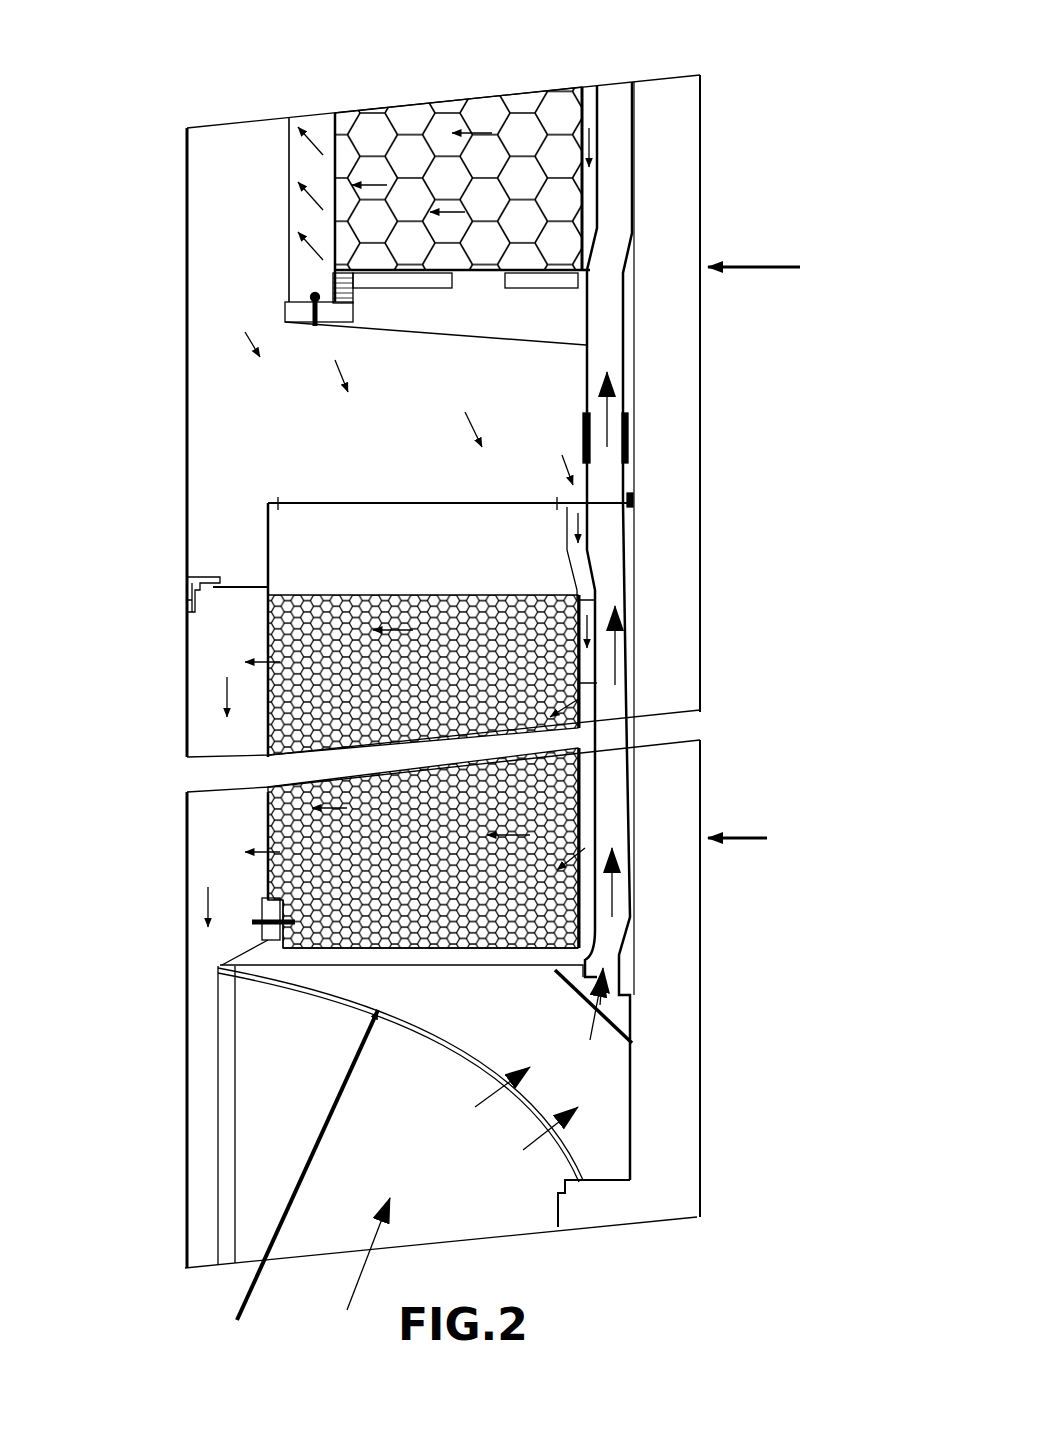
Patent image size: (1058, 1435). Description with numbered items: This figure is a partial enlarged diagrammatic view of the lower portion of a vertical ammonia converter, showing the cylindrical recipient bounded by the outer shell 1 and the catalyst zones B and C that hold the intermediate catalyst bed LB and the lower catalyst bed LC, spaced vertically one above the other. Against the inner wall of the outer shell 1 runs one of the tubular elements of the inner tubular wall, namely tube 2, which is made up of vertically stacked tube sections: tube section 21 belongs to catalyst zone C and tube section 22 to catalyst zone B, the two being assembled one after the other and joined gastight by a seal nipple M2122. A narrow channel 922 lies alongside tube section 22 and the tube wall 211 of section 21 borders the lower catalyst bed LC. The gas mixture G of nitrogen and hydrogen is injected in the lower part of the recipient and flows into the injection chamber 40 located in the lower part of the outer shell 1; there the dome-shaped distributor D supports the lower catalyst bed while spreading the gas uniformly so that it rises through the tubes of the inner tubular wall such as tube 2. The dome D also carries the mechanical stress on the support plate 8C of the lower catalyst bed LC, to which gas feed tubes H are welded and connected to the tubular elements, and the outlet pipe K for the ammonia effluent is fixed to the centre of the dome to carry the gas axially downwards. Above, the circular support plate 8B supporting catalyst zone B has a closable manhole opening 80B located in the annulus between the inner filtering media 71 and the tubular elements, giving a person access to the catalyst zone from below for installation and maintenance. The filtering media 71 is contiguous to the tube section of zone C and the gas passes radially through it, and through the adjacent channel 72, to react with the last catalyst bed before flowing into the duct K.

The outer shell 1 is at (675, 860).
The tube 2 is at (610, 473).
The tube section 21 is at (609, 780).
The duct inner wall 211 is at (587, 813).
The tube section 22 is at (615, 210).
The seal nipple M2122 is at (633, 428).
The air channel 922 is at (590, 122).
The intermediate catalyst bed LB is at (525, 122).
The lower catalyst bed LC is at (560, 900).
The upper air channel 72 is at (330, 258).
The filtering media 71 is at (265, 550).
The support plate 8B is at (527, 277).
The closable opening 80B is at (477, 278).
The support plate 8C is at (546, 950).
The injection chamber 40 is at (513, 1208).
The outlet pipe K is at (227, 1217).
The gas feed tube H is at (557, 967).
The catalyst zone B is at (764, 267).
The catalyst zone C is at (750, 838).
The dome-shaped distributor D is at (298, 1183).
The gas mixture G is at (352, 1271).